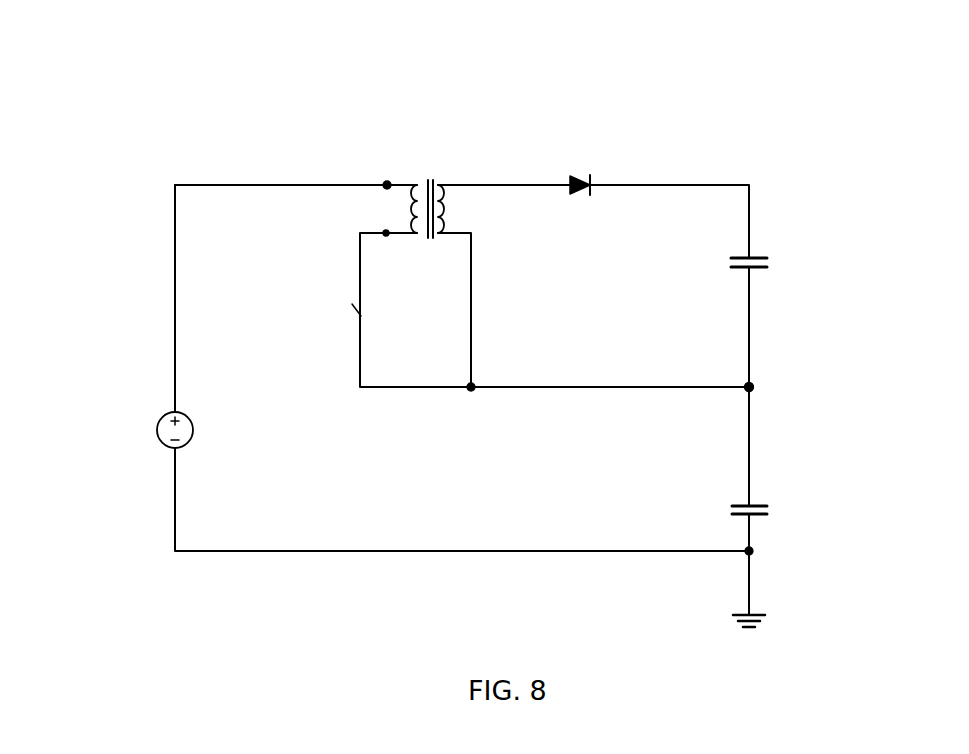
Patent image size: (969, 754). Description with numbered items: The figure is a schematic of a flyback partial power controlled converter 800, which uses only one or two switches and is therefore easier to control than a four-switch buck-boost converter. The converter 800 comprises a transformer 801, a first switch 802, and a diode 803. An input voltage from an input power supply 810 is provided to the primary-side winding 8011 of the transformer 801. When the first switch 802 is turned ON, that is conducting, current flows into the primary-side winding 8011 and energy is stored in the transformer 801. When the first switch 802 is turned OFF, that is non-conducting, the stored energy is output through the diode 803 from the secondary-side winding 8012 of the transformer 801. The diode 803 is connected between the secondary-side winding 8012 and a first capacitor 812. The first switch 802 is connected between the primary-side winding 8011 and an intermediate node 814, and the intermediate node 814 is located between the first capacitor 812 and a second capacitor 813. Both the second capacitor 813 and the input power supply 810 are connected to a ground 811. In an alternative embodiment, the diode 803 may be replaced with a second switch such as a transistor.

The flyback partial power controlled converter 800 is at (152, 117).
The transformer 801 is at (414, 160).
The primary-side winding 8011 is at (400, 213).
The secondary-side winding 8012 is at (445, 208).
The first switch 802 is at (352, 318).
The diode 803 is at (578, 170).
The input power supply 810 is at (163, 445).
The ground 811 is at (748, 586).
The first capacitor 812 is at (753, 250).
The second capacitor 813 is at (753, 497).
The intermediate node 814 is at (745, 390).